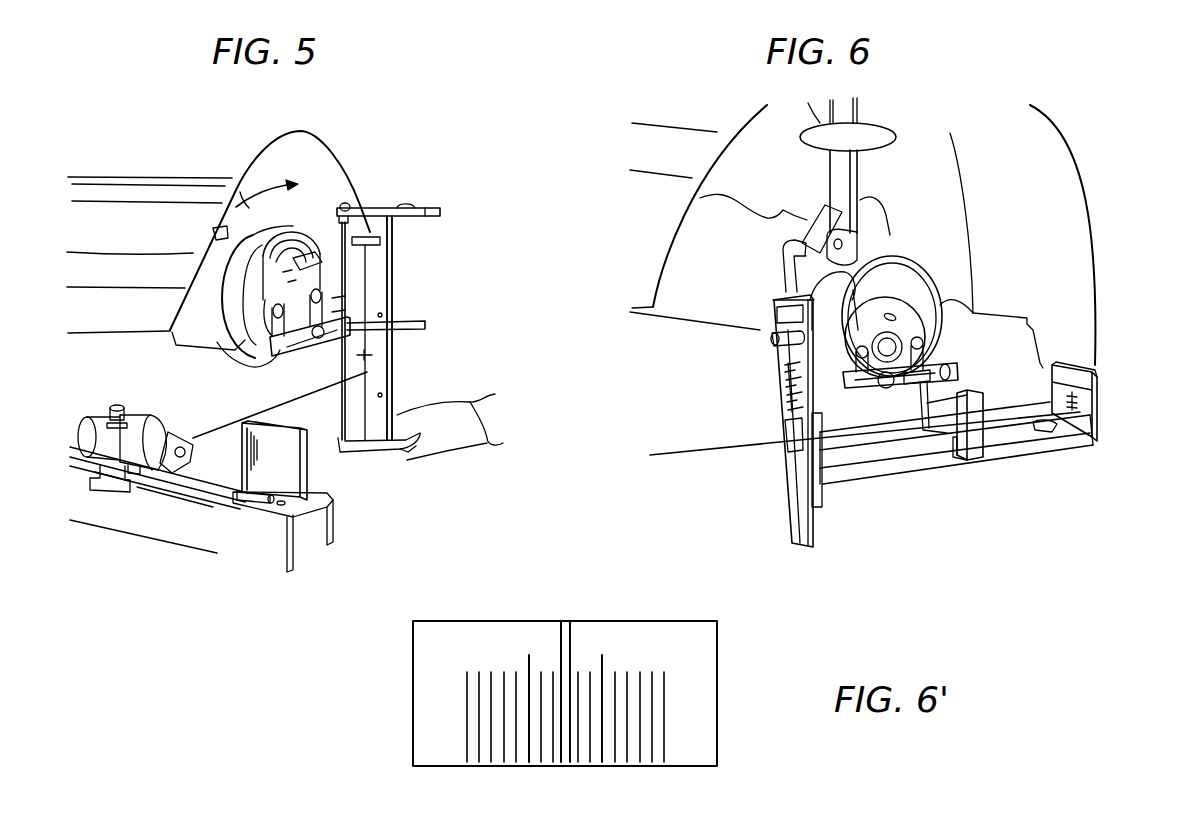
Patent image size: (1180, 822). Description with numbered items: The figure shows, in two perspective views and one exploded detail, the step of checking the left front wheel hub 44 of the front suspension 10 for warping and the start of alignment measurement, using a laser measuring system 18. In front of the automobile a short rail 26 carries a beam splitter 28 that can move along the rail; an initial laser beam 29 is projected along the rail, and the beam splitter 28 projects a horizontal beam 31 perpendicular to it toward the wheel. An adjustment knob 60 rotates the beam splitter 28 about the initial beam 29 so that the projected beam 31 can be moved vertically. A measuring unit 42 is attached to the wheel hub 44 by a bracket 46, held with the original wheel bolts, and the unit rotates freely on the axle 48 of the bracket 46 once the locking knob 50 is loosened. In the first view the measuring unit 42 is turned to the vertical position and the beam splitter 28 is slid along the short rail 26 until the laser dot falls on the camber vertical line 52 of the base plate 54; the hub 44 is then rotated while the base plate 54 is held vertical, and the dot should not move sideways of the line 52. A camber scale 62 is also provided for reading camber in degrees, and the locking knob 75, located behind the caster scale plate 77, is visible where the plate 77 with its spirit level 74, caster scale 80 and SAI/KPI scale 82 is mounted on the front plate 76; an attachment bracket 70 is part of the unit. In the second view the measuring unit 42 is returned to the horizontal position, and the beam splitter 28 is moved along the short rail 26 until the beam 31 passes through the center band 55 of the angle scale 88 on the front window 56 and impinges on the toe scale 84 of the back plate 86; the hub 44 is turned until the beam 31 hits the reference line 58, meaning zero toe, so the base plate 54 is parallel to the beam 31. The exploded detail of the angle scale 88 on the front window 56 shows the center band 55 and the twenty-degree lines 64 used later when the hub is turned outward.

In FIG. 6, the front suspension 10 is at (900, 200).
In FIG. 5, the laser measuring system 18 is at (134, 520).
In FIG. 5, the short rail 26 is at (335, 516).
In FIG. 5, the beam splitter 28 is at (138, 414).
In FIG. 5, the laser beam 29 is at (64, 426).
In FIG. 5, the beam 31 is at (292, 395).
In FIG. 6, the beam 31 is at (672, 452).
In FIG. 5, the measuring unit 42 is at (420, 374).
In FIG. 6, the measuring unit 42 is at (925, 478).
In FIG. 5, the front wheel hub 44 is at (256, 352).
In FIG. 6, the front wheel hub 44 is at (907, 312).
In FIG. 5, the bracket 46 is at (320, 346).
In FIG. 6, the bracket 46 is at (946, 360).
In FIG. 5, the axle 48 is at (360, 320).
In FIG. 6, the axle 48 is at (903, 392).
In FIG. 6, the locking knob 50 is at (955, 382).
In FIG. 5, the camber vertical line 52 is at (372, 255).
In FIG. 5, the base plate 54 is at (388, 358).
In FIG. 6, the base plate 54 is at (1028, 462).
In FIG. 6', the center band 55 is at (574, 690).
In FIG. 6, the front window 56 is at (788, 452).
In FIG. 6', the front window 56 is at (722, 650).
In FIG. 6, the reference line 58 is at (1073, 432).
In FIG. 5, the adjustment knob 60 is at (117, 405).
In FIG. 5, the camber scale 62 is at (374, 232).
In FIG. 6', the 20° line 64 is at (525, 660).
In FIG. 5, the attachment bracket 70 is at (420, 324).
In FIG. 6, the attachment bracket 70 is at (955, 448).
In FIG. 6, the spirit level 74 is at (770, 340).
In FIG. 5, the locking knob 75 is at (398, 225).
In FIG. 5, the front plate 76 is at (425, 215).
In FIG. 6, the front plate 76 is at (822, 510).
In FIG. 6, the caster scale plate 77 is at (778, 356).
In FIG. 6, the caster scale 80 is at (780, 300).
In FIG. 6, the SAI/KPI scale 82 is at (778, 398).
In FIG. 6, the toe scale 84 is at (1085, 407).
In FIG. 5, the back plate 86 is at (407, 452).
In FIG. 6, the back plate 86 is at (1100, 380).
In FIG. 6', the angle scale 88 is at (688, 711).